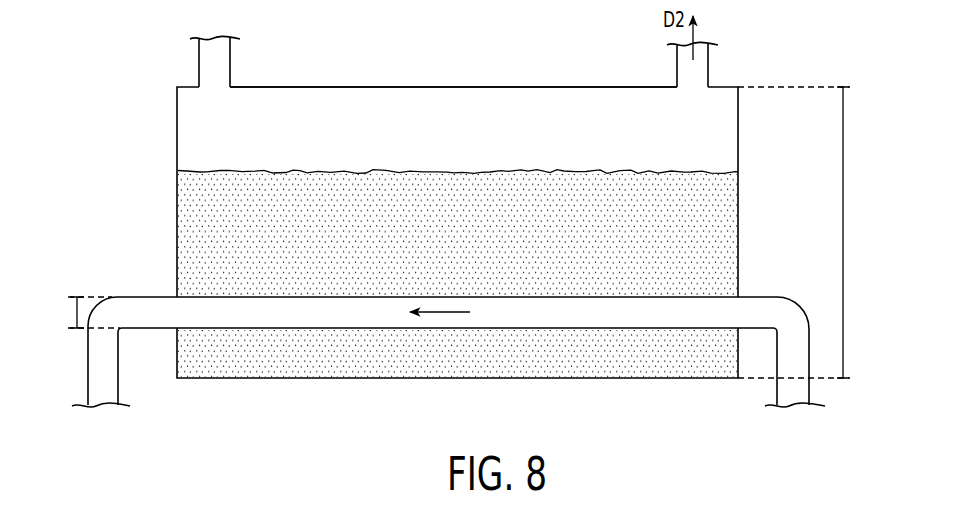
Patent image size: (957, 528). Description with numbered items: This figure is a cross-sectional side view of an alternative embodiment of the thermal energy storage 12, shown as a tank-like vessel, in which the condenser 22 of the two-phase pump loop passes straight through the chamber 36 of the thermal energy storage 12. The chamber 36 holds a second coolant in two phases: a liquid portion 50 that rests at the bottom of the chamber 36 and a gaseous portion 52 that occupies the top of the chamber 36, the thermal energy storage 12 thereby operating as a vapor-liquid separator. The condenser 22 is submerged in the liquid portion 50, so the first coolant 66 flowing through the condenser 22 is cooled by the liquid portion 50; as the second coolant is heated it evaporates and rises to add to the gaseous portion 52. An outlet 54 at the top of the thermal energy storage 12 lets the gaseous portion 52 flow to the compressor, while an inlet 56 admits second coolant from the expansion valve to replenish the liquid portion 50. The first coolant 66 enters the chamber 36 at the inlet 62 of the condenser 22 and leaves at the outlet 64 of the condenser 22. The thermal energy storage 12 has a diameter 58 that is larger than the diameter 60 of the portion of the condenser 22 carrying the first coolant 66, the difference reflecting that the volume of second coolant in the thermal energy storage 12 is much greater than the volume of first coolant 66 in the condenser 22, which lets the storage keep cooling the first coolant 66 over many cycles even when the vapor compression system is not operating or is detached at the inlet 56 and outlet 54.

The thermal energy storage 12 is at (177, 203).
The condenser 22 is at (255, 320).
The chamber 36 is at (404, 110).
The liquid portion 50 is at (471, 242).
The gaseous portion 52 is at (517, 142).
The outlet 54 is at (693, 90).
The inlet 56 is at (213, 94).
The diameter 58 is at (843, 228).
The diameter 60 is at (76, 316).
The inlet 62 is at (726, 310).
The outlet 64 is at (164, 307).
The first coolant 66 is at (565, 323).